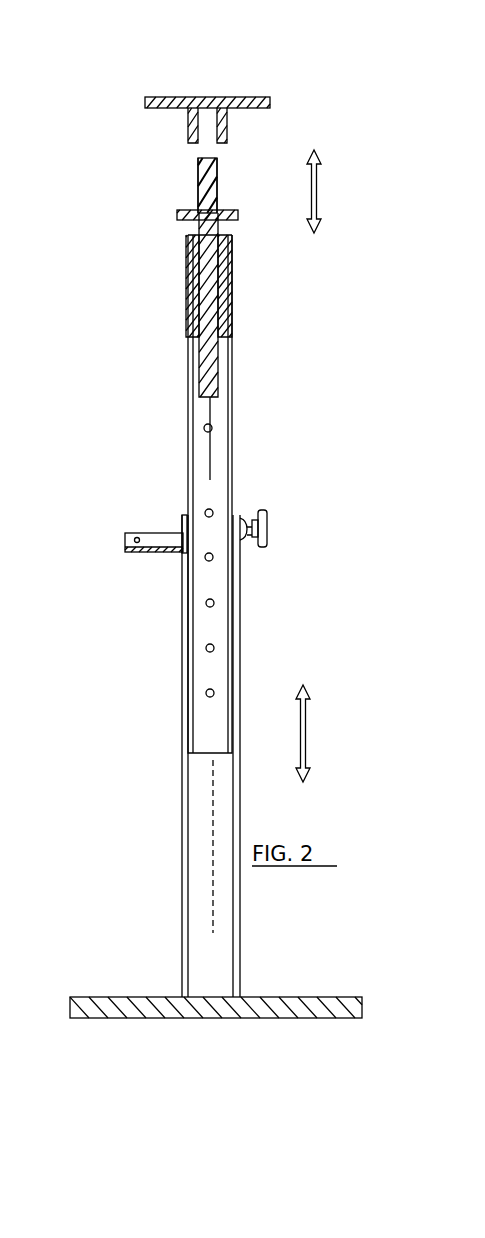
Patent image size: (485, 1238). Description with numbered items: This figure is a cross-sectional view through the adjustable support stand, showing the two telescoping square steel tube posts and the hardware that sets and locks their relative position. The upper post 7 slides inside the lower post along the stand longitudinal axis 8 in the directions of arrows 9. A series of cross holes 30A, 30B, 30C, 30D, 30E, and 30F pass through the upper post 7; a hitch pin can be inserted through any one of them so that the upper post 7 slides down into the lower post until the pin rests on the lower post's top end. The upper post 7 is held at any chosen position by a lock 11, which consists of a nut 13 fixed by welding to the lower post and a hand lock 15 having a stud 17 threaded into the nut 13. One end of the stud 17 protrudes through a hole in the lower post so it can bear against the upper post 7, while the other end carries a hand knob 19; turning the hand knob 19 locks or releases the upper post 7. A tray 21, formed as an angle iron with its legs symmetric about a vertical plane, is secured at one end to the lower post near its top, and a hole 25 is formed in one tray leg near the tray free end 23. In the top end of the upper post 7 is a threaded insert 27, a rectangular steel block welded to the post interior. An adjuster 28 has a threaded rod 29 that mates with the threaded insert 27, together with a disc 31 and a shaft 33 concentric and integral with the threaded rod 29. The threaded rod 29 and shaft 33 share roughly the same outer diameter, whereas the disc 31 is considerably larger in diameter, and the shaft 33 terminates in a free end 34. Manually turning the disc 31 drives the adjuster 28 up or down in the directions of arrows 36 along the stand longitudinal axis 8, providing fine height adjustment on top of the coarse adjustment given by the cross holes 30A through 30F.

The upper post 7 is at (187, 352).
The stand longitudinal axis 8 is at (213, 793).
The arrows 9 is at (307, 735).
The lock 11 is at (275, 510).
The nut 13 is at (240, 517).
The hand lock 15 is at (267, 503).
The stud 17 is at (249, 538).
The hand knob 19 is at (260, 529).
The tray 21 is at (160, 540).
The tray free end 23 is at (125, 547).
The hole 25 is at (137, 537).
The threaded insert 27 is at (222, 303).
The adjuster 28 is at (219, 183).
The threaded rod 29 is at (208, 365).
The cross hole 30A is at (215, 690).
The cross hole 30B is at (205, 650).
The cross hole 30C is at (215, 603).
The cross hole 30D is at (205, 560).
The cross hole 30E is at (206, 517).
The cross hole 30F is at (204, 428).
The disc 31 is at (179, 216).
The shaft 33 is at (198, 193).
The free end 34 is at (198, 156).
The arrows 36 is at (318, 196).